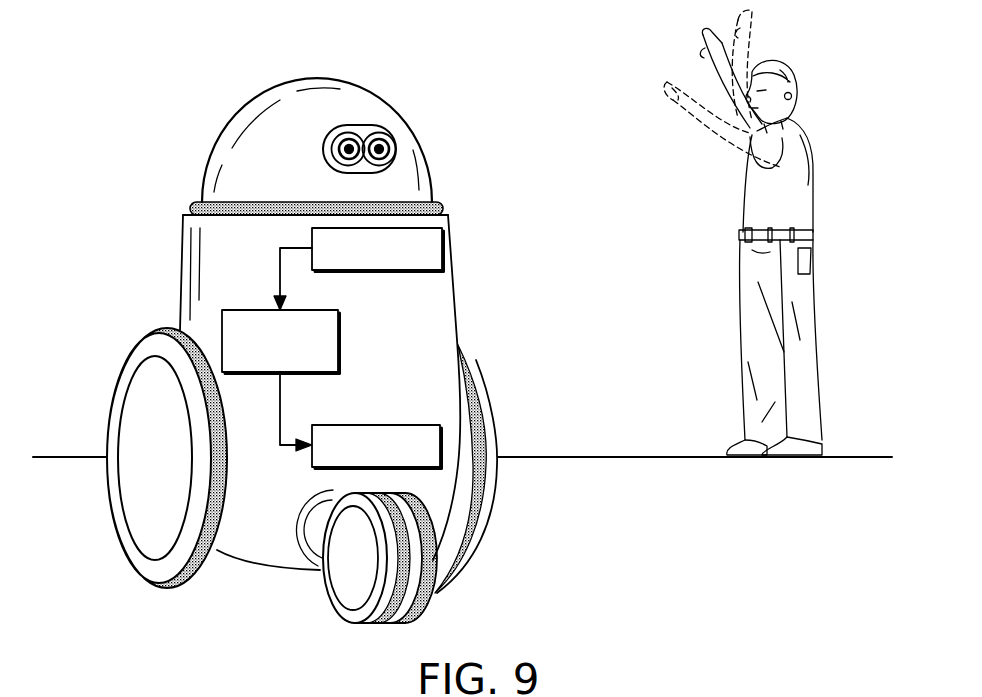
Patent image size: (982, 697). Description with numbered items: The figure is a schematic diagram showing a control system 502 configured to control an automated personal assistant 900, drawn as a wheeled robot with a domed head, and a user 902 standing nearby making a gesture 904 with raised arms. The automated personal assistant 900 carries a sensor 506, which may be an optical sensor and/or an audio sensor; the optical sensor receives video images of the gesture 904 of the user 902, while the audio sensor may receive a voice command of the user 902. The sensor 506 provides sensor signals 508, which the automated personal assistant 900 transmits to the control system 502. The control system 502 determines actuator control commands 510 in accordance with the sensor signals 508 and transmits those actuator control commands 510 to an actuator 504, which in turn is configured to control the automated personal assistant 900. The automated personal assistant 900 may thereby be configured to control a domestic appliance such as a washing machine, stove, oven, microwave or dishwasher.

The automated personal assistant 900 is at (250, 88).
The control system 502 is at (338, 342).
The actuator 504 is at (393, 425).
The sensor 506 is at (400, 271).
The sensor signals 508 is at (280, 270).
The actuator control commands 510 is at (280, 400).
The user 902 is at (822, 178).
The gesture 904 is at (700, 38).